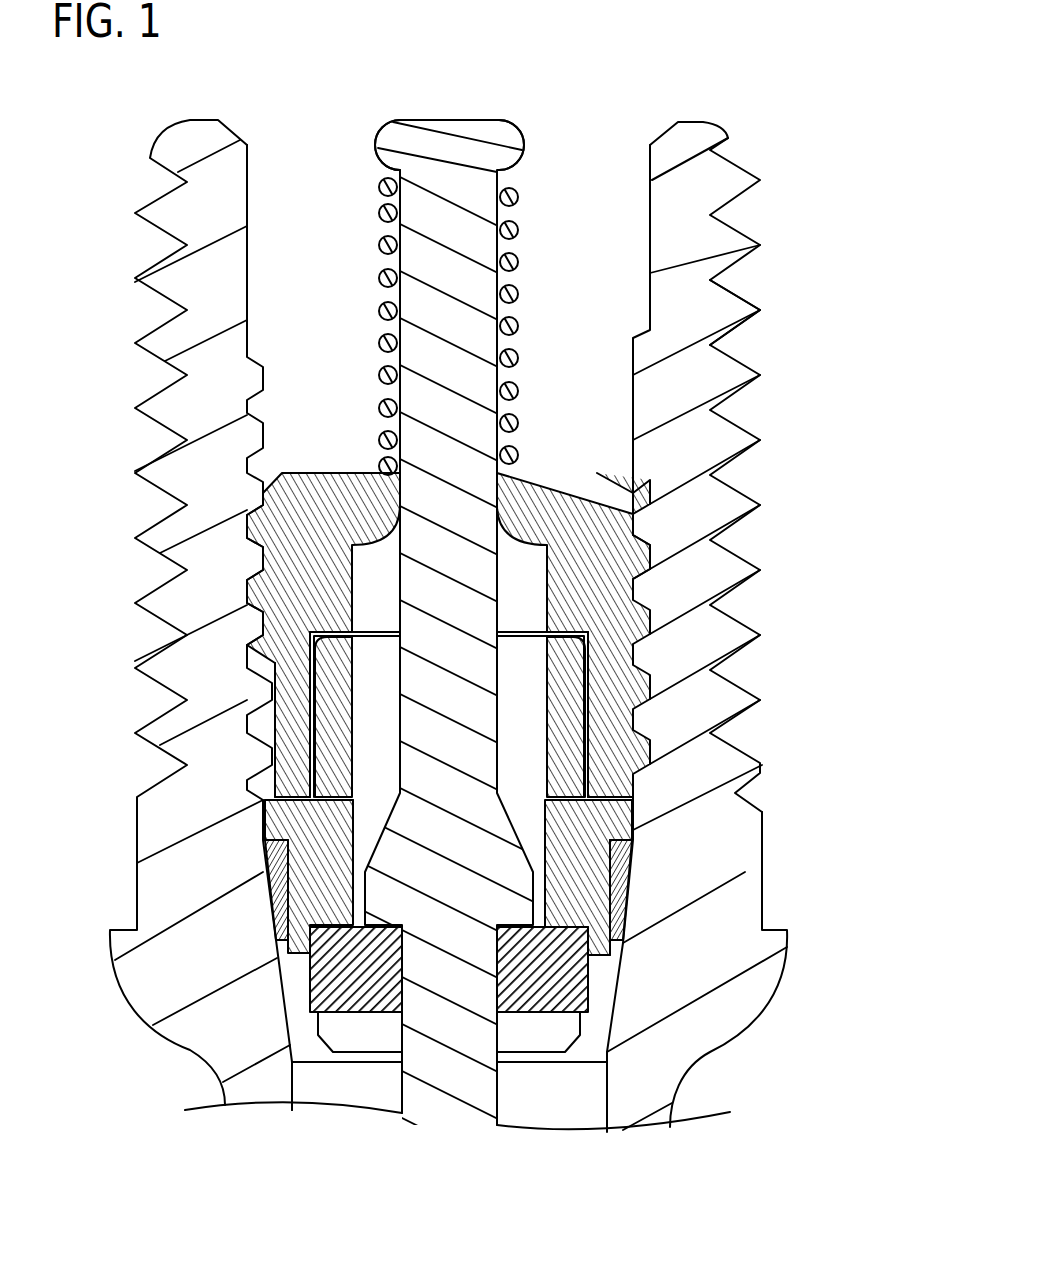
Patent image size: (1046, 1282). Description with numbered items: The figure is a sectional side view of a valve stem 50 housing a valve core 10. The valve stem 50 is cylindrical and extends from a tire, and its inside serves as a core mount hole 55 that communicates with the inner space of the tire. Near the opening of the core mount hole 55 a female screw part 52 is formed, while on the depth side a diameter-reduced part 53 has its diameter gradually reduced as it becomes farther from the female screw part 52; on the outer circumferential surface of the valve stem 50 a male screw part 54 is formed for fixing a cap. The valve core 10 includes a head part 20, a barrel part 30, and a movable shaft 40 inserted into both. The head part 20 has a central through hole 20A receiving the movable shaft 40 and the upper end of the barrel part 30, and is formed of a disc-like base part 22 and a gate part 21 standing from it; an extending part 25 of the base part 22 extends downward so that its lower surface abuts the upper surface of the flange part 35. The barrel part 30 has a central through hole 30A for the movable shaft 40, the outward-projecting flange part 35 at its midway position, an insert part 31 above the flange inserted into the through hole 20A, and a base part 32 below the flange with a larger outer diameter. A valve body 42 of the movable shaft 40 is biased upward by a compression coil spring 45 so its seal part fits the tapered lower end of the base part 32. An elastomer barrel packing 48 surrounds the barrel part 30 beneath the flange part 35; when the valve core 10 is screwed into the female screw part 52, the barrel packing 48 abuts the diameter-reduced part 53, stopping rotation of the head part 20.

The valve core 10 is at (489, 102).
The head part 20 is at (632, 463).
The through hole 20A is at (311, 702).
The gate part 21 is at (636, 578).
The base part 22 is at (633, 662).
The extending part 25 is at (607, 716).
The barrel part 30 is at (277, 930).
The through hole 30A is at (358, 771).
The insert part 31 is at (570, 752).
The base part 32 is at (622, 945).
The flange part 35 is at (633, 820).
The movable shaft 40 is at (420, 138).
The valve body 42 is at (560, 1005).
The compression coil spring 45 is at (519, 197).
The barrel packing 48 is at (632, 875).
The valve stem 50 is at (773, 187).
The female screw part 52 is at (610, 463).
The diameter-reduced part 53 is at (608, 986).
The male screw part 54 is at (762, 312).
The core mount hole 55 is at (287, 126).